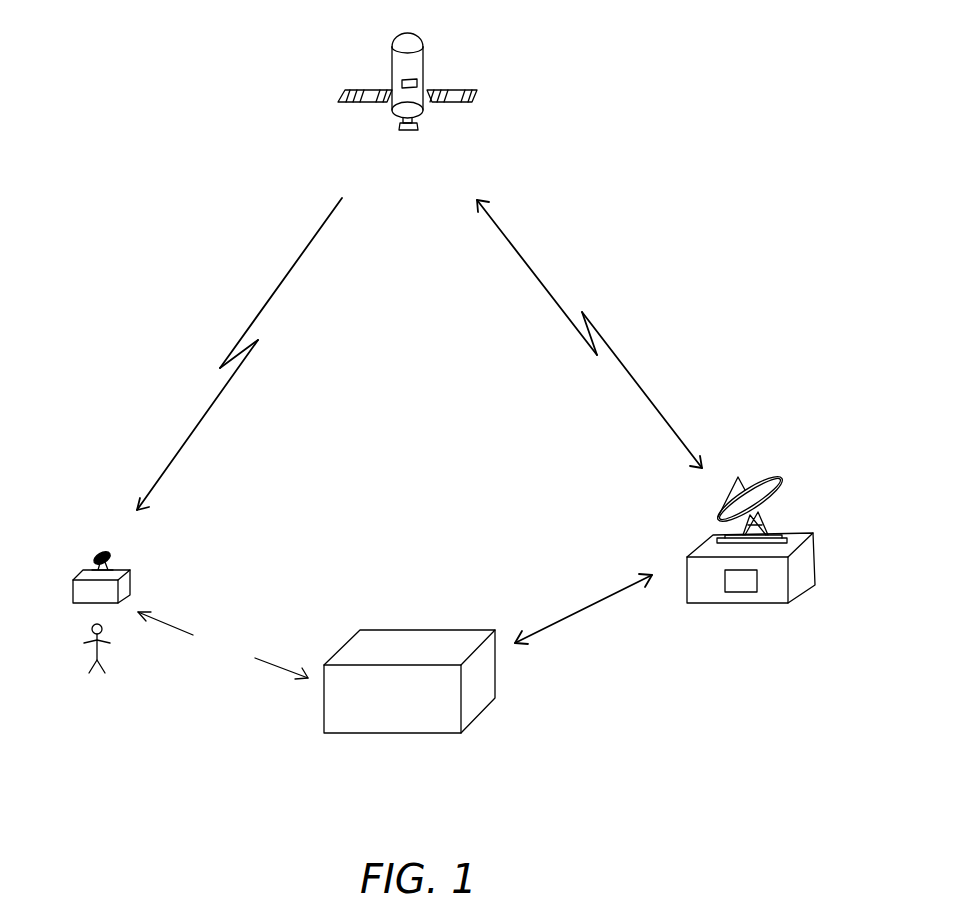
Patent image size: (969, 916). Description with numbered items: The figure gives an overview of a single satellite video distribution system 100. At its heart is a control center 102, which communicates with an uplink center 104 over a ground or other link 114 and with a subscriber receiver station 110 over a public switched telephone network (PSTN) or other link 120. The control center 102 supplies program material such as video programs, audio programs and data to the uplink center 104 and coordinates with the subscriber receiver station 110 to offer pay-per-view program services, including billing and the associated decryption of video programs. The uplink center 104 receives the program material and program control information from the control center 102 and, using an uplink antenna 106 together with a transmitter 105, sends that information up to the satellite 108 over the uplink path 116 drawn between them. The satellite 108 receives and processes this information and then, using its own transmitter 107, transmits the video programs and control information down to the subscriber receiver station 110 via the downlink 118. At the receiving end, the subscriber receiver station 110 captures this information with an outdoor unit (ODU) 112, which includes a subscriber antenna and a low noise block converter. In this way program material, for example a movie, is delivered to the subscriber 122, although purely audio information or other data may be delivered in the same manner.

The video distribution system 100 is at (657, 184).
The control center 102 is at (473, 717).
The uplink center 104 is at (732, 603).
The transmitter 105 is at (757, 588).
The uplink antenna 106 is at (783, 485).
The transmitter 107 is at (410, 68).
The satellite 108 is at (448, 100).
The subscriber receiver station 110 is at (137, 577).
The outdoor unit (ODU) 112 is at (95, 552).
The ground or other link 114 is at (578, 608).
The satellite link to gateway 116 is at (628, 372).
The downlink 118 is at (283, 283).
The public switched telephone network (PSTN) or other link 120 is at (255, 620).
The subscriber 122 is at (117, 662).